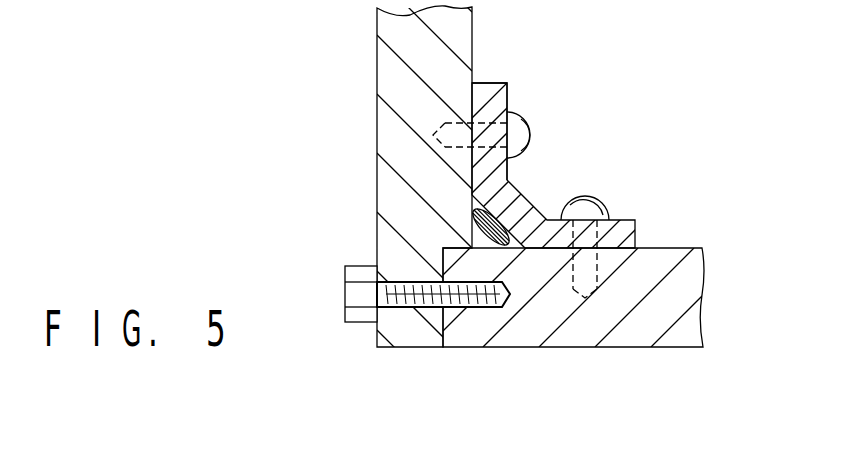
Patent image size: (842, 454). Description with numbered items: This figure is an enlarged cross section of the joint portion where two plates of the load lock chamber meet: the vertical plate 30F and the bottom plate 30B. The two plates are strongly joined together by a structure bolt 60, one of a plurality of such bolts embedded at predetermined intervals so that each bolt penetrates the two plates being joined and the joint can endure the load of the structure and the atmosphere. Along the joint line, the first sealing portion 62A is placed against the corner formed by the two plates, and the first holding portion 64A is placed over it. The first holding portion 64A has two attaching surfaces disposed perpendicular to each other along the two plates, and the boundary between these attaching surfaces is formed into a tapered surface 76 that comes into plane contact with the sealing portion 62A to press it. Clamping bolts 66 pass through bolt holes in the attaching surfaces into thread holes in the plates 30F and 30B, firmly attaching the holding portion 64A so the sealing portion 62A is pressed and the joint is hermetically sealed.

The plate 30F is at (376, 75).
The bottom plate 30B is at (692, 285).
The first sealing portion 62A is at (525, 198).
The first holding portion 64A is at (507, 88).
The clamping bolt 66 is at (527, 128).
The structure bolt 60 is at (345, 290).
The tapered surface 76 is at (532, 213).